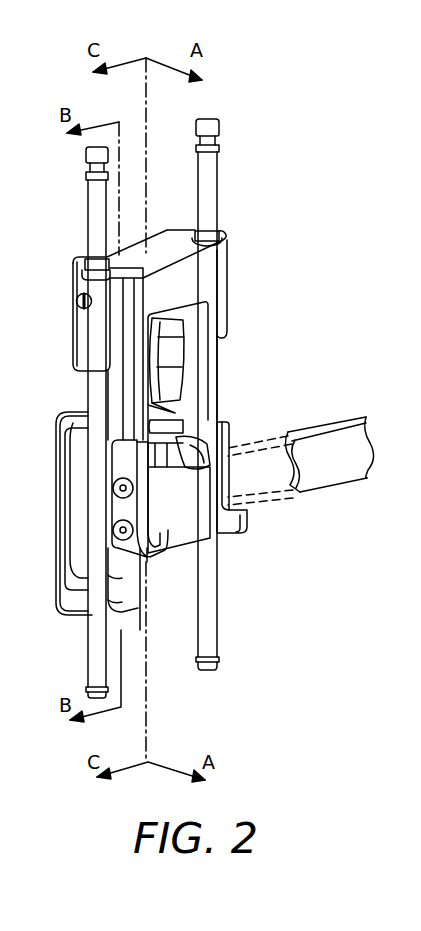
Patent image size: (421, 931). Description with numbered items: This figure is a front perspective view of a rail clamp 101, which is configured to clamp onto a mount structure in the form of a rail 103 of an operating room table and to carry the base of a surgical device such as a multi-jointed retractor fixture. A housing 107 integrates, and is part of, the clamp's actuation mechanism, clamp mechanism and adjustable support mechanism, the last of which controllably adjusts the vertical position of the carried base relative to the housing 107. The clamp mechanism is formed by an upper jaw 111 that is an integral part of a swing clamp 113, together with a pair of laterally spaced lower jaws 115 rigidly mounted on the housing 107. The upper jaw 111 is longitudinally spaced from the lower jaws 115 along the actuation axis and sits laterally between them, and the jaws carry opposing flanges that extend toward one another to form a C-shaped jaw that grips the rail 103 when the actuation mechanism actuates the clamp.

The rail clamp 101 is at (342, 67).
The rail 103 is at (360, 445).
The housing 107 is at (218, 279).
The upper jaw 111 is at (222, 425).
The swing clamp 113 is at (178, 418).
The lower jaws 115 is at (148, 553).